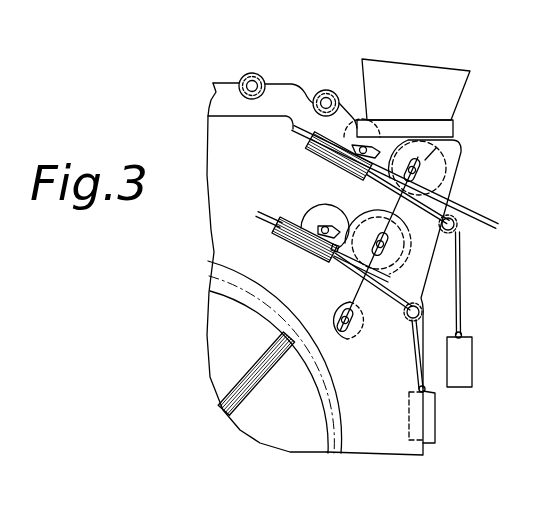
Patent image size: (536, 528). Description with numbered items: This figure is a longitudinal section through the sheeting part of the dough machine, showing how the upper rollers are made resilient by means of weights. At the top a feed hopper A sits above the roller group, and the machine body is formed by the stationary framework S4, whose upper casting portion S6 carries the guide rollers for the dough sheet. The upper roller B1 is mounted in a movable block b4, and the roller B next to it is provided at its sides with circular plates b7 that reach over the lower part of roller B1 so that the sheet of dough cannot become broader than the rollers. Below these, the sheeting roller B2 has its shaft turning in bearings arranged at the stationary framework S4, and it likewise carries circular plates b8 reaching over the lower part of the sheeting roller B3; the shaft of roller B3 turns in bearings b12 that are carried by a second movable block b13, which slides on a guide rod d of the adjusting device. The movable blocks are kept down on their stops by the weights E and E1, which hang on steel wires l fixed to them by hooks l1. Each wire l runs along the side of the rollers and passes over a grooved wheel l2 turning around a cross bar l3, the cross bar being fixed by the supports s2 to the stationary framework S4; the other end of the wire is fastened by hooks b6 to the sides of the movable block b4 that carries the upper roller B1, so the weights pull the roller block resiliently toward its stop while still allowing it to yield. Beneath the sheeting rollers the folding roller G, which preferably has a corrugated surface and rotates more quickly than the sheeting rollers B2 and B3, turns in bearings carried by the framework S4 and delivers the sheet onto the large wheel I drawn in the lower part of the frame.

The hopper A is at (428, 72).
The frame upper part S6 is at (223, 92).
The stationary framework S4 is at (392, 447).
The movable block b4 is at (313, 101).
The upper roller B1 is at (357, 120).
The roller B is at (428, 167).
The circular plates b7 is at (432, 152).
The sheeting roller B2 is at (371, 232).
The sheeting roller B3 is at (326, 214).
The bearings b12 is at (318, 228).
The hooks b6 is at (306, 146).
The guide rail d is at (484, 212).
The circular plates b8 is at (460, 287).
The movable block b13 is at (281, 234).
The steel wire l is at (393, 290).
The supports s2 is at (447, 234).
The grooved wheels l2 is at (462, 228).
The cross bar l3 is at (457, 232).
The hooks l1 is at (463, 326).
The weight E is at (464, 360).
The weight E1 is at (432, 423).
The wheel I is at (232, 272).
The folding roller G is at (339, 312).